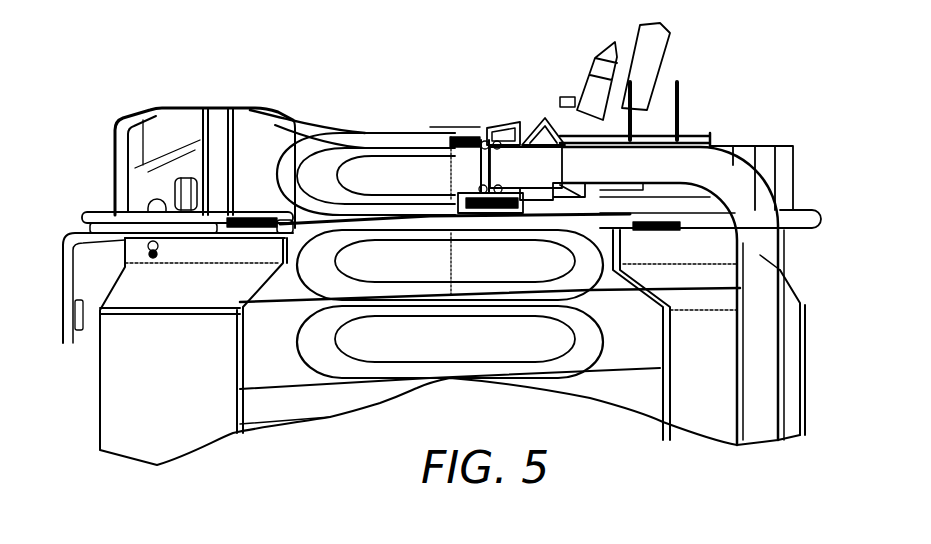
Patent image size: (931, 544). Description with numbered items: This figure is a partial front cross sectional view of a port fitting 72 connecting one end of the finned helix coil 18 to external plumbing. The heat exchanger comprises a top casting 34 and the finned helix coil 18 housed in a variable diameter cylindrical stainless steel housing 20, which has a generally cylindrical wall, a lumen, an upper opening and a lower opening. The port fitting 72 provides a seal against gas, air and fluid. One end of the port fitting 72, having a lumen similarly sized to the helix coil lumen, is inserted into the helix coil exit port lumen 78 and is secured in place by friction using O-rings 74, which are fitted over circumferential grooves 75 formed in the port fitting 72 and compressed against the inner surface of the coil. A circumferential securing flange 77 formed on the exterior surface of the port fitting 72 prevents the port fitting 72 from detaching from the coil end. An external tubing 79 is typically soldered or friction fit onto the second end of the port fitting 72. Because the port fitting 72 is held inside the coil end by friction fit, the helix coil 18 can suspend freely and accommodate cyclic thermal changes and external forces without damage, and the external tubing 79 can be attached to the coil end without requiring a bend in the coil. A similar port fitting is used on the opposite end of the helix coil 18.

The top casting 34 is at (157, 115).
The finned helix coil 18 is at (295, 188).
The housing 20 is at (157, 400).
The helix coil exit port lumen 78 is at (467, 175).
The circumferential groove 75 is at (480, 150).
The O-ring 74 is at (487, 142).
The circumferential securing flange 77 is at (520, 130).
The external tubing 79 is at (637, 160).
The port fitting 72 is at (587, 192).